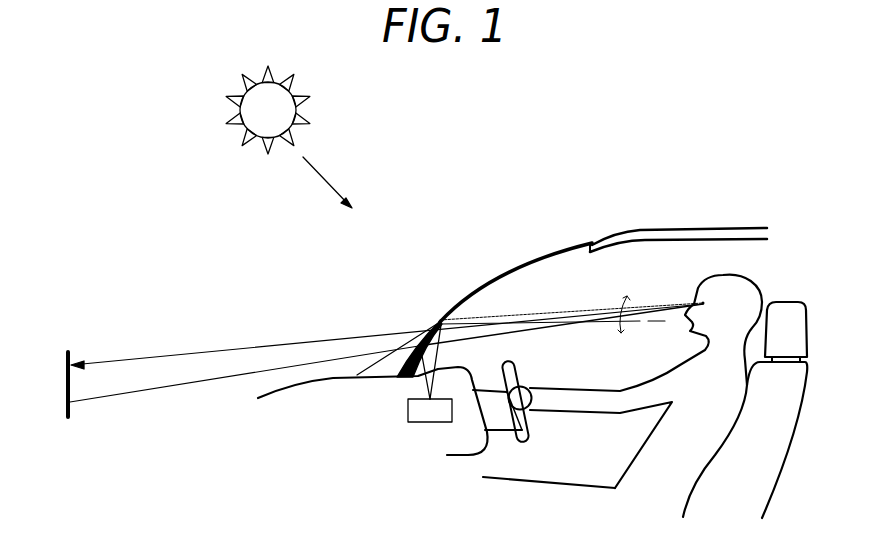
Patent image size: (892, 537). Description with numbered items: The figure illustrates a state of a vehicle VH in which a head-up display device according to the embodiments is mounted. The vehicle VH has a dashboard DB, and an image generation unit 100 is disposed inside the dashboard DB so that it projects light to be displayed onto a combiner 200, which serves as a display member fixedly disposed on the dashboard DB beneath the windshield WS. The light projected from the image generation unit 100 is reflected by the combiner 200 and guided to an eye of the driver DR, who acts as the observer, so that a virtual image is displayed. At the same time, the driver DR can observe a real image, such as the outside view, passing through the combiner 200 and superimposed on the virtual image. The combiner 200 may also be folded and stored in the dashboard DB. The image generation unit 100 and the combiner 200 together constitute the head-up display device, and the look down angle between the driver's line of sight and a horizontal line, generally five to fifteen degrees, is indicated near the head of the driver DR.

The image generation unit 100 is at (423, 424).
The combiner 200 is at (440, 322).
The windshield WS is at (507, 273).
The vehicle VH is at (623, 213).
The driver DR is at (703, 282).
The dashboard DB is at (455, 366).